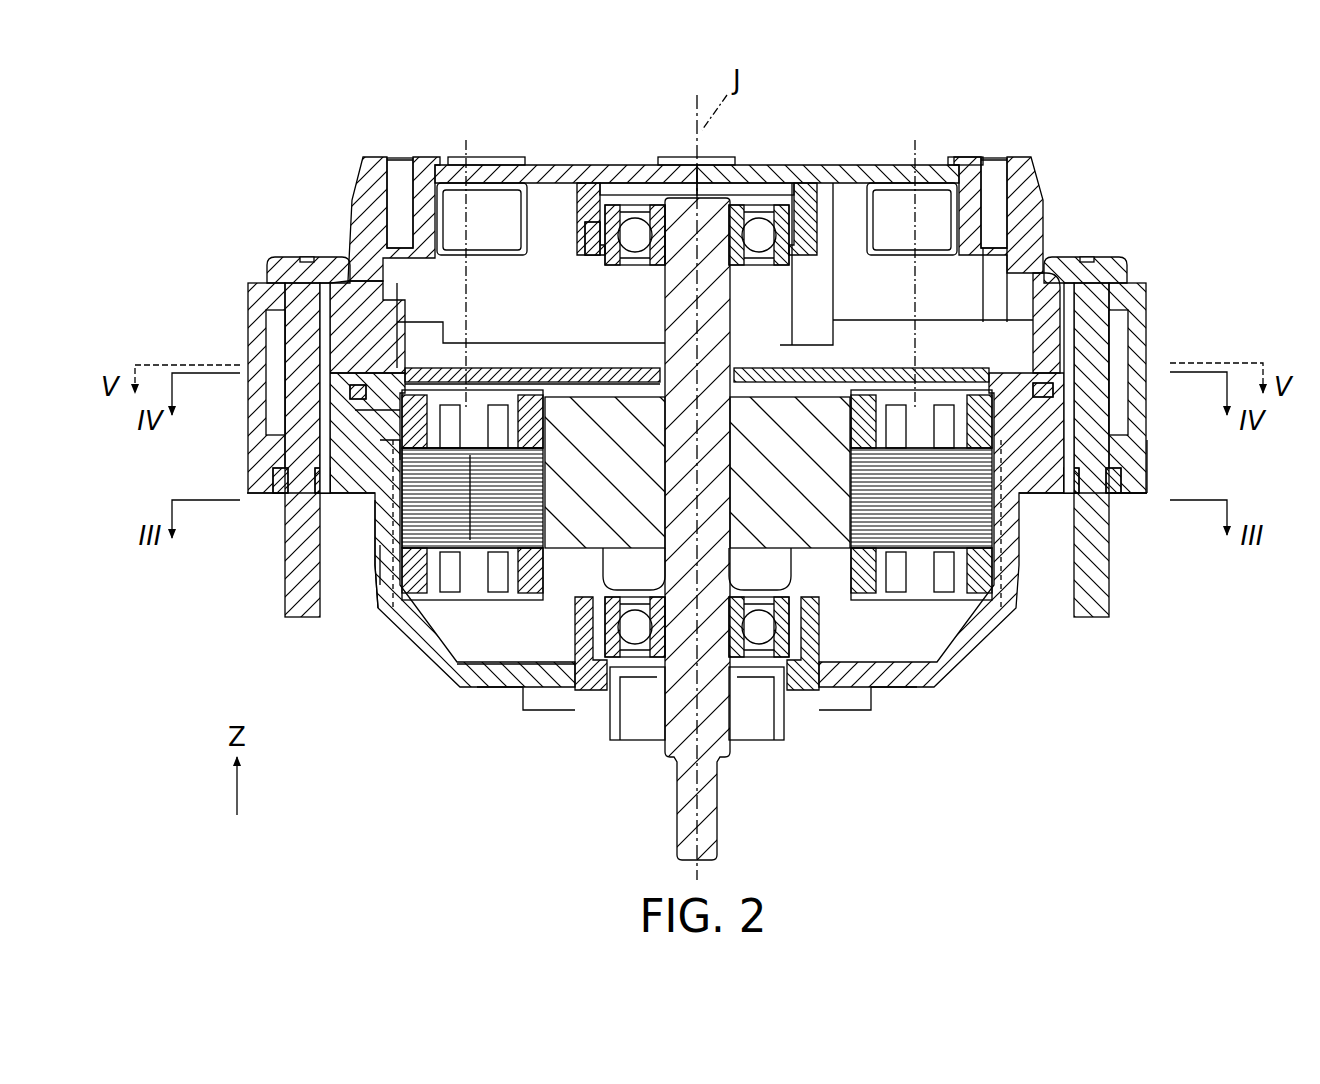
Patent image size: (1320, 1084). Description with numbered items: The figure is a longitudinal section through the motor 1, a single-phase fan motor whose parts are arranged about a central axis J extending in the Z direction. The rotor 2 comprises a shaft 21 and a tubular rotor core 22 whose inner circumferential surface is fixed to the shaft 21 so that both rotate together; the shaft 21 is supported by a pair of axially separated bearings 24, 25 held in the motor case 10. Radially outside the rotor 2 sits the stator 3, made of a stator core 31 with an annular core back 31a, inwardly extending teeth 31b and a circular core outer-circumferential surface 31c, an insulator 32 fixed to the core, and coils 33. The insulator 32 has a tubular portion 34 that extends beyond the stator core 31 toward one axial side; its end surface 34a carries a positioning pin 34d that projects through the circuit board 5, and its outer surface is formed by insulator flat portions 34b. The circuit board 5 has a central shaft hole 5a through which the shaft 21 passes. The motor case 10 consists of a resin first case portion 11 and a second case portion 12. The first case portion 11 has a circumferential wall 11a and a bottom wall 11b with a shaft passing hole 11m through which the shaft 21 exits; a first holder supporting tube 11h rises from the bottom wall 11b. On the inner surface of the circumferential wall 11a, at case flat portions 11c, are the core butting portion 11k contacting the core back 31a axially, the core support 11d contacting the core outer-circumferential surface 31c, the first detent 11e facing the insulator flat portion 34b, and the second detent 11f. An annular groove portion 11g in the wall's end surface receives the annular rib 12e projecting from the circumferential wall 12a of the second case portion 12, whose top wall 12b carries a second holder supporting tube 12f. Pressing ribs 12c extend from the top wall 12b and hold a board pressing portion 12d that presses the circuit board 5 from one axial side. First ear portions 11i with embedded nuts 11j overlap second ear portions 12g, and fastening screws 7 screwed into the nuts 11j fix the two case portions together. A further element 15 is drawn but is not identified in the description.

The motor 1 is at (1190, 153).
The rotor 2 is at (573, 568).
The stator 3 is at (930, 602).
The circuit board 5 is at (948, 355).
The shaft hole 5a is at (588, 213).
The fastening screw 7 is at (1110, 262).
The motor case 10 is at (1032, 155).
The first case portion 11 is at (383, 622).
The circumferential wall 11a is at (375, 560).
The bottom wall 11b is at (580, 633).
The case flat portion 11c is at (390, 458).
The core support 11d is at (393, 545).
The first detent 11e is at (388, 420).
The second detent 11f is at (492, 380).
The annular groove portion 11g is at (345, 378).
The first holder supporting tube 11h is at (562, 677).
The first ear portion 11i is at (1140, 460).
The nut 11j is at (1125, 492).
The core butting portion 11k is at (387, 557).
The shaft passing hole 11m is at (633, 667).
The second case portion 12 is at (360, 155).
The circumferential wall 12a is at (372, 268).
The top wall 12b is at (930, 170).
The pressing rib 12c is at (415, 270).
The board pressing portion 12d is at (423, 350).
The annular rib 12e is at (297, 350).
The second holder supporting tube 12f is at (580, 210).
The second ear portion 12g is at (1145, 315).
The seal member 15 is at (1050, 392).
The shaft 21 is at (722, 222).
The rotor core 22 is at (817, 537).
The bearing 24 is at (615, 640).
The bearing 25 is at (636, 228).
The stator core 31 is at (977, 573).
The core back 31a is at (410, 510).
The teeth 31b is at (473, 510).
The core outer-circumferential surface 31c is at (412, 478).
The insulator 32 is at (884, 568).
The coil 33 is at (686, 258).
The tubular portion 34 is at (1000, 392).
The end surface 34a is at (340, 280).
The insulator flat portion 34b is at (390, 450).
The positioning pin 34d is at (580, 360).